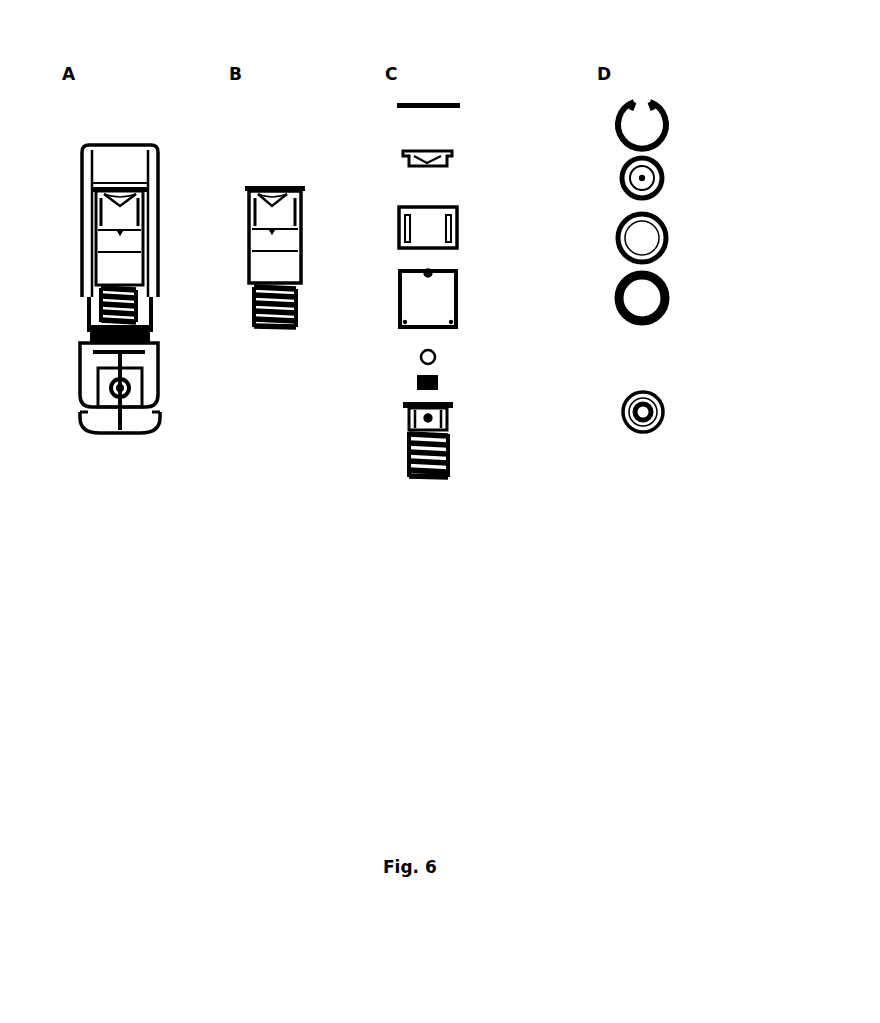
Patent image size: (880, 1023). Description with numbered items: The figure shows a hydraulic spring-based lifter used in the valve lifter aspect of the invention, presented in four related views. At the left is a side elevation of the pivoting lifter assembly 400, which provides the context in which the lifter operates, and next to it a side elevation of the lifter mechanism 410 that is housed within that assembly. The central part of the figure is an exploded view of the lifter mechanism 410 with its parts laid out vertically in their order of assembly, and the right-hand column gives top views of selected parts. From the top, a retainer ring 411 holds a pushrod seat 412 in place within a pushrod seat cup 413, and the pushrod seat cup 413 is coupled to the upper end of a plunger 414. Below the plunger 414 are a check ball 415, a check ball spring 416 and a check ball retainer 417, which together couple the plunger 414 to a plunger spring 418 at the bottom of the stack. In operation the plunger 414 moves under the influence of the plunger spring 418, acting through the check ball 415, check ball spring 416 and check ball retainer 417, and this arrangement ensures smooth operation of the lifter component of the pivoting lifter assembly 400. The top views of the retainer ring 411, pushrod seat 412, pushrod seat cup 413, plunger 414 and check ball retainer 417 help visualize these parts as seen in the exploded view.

The pivoting lifter assembly 400 is at (113, 456).
The lifter mechanism 410 is at (272, 342).
The retainer ring 411 is at (700, 87).
The pushrod seat 412 is at (707, 144).
The pushrod seat cup 413 is at (712, 195).
The plunger 414 is at (430, 270).
The check ball 415 is at (436, 352).
The check ball spring 416 is at (417, 381).
The check ball retainer 417 is at (447, 416).
The plunger spring 418 is at (410, 473).